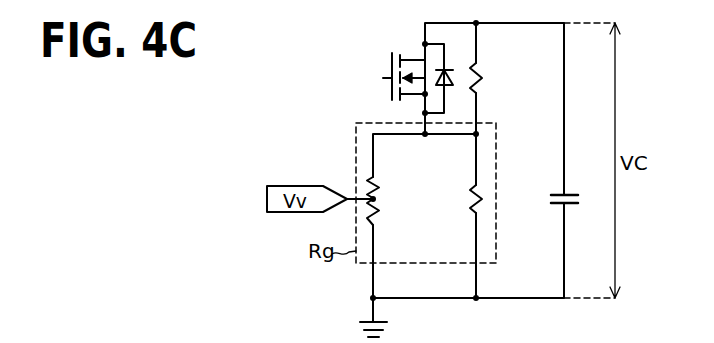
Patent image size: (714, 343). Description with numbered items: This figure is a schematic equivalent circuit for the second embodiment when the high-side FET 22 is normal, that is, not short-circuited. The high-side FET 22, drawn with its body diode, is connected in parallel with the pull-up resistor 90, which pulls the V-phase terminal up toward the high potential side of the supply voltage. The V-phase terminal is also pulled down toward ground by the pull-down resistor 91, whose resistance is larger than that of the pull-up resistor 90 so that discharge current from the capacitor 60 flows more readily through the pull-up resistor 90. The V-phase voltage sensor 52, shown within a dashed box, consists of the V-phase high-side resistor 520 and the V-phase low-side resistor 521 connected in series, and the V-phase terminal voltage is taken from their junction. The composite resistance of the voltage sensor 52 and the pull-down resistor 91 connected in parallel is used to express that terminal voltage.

The high-side FET 22 is at (385, 69).
The pull-up resistor 90 is at (484, 76).
The pull-down resistor 91 is at (484, 204).
The capacitor 60 is at (549, 196).
The V-phase voltage sensor 52 is at (376, 186).
The V-phase high-side resistor 520 is at (382, 194).
The V-phase low-side resistor 521 is at (383, 220).